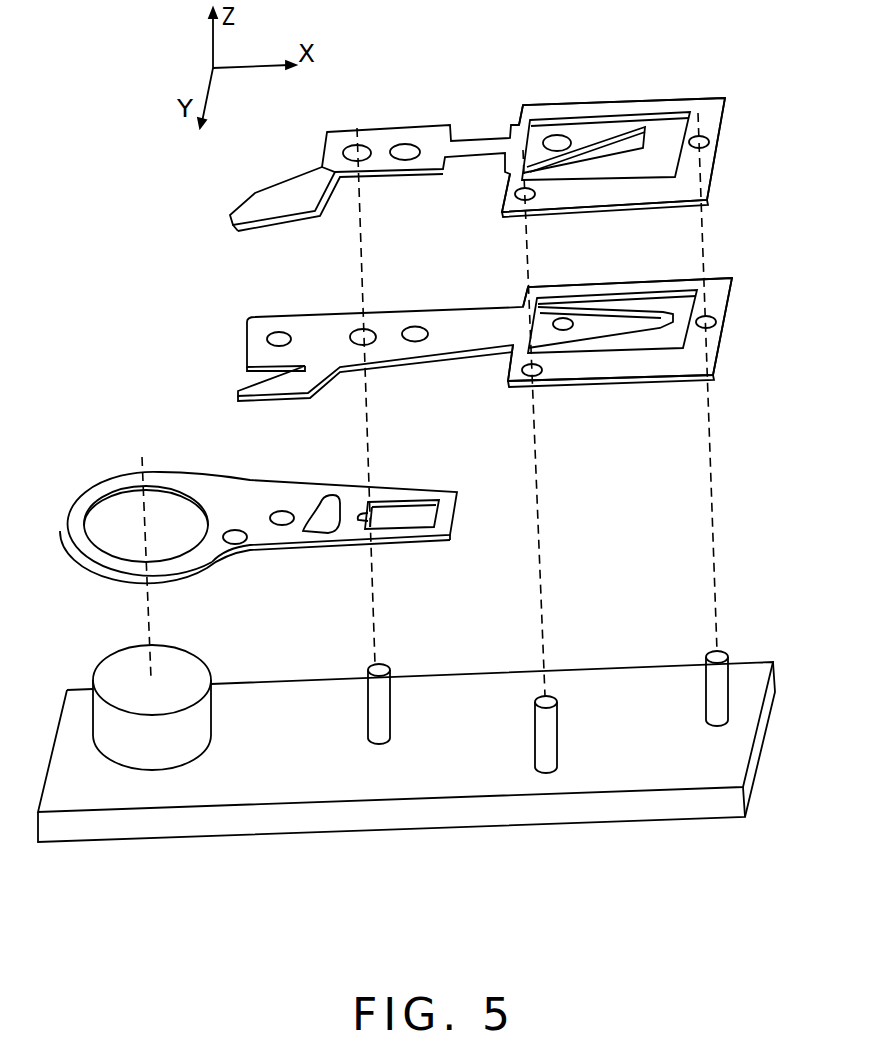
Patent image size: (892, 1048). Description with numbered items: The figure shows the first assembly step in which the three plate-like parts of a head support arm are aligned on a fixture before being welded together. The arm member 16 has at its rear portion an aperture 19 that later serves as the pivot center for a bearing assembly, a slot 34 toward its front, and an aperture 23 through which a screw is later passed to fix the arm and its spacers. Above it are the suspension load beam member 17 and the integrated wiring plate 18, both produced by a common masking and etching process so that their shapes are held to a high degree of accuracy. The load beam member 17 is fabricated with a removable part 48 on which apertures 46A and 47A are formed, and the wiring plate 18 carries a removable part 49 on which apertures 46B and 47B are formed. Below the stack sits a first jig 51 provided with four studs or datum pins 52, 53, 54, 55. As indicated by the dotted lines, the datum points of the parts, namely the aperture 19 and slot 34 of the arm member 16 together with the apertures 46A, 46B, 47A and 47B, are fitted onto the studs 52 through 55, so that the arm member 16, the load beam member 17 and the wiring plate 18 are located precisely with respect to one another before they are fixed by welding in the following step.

The arm member 16 is at (188, 475).
The suspension load beam member 17 is at (254, 318).
The integrated wiring plate 18 is at (328, 132).
The aperture 19 is at (117, 503).
The aperture 23 is at (235, 545).
The slot 34 is at (367, 500).
The aperture 46A is at (520, 377).
The aperture 46B is at (515, 197).
The aperture 47A is at (703, 316).
The aperture 47B is at (700, 136).
The removable part 48 is at (602, 288).
The removable part 49 is at (587, 110).
The first jig 51 is at (477, 818).
The stud 52 is at (193, 665).
The stud 53 is at (388, 665).
The stud 54 is at (557, 708).
The stud 55 is at (707, 670).